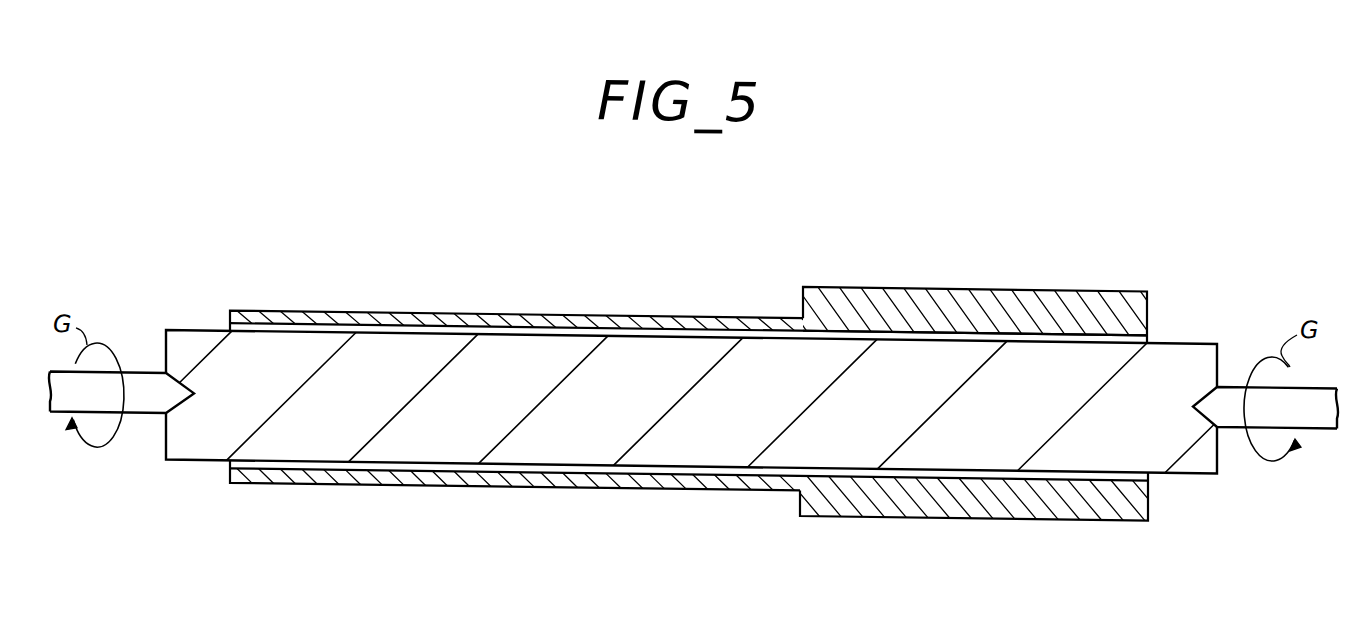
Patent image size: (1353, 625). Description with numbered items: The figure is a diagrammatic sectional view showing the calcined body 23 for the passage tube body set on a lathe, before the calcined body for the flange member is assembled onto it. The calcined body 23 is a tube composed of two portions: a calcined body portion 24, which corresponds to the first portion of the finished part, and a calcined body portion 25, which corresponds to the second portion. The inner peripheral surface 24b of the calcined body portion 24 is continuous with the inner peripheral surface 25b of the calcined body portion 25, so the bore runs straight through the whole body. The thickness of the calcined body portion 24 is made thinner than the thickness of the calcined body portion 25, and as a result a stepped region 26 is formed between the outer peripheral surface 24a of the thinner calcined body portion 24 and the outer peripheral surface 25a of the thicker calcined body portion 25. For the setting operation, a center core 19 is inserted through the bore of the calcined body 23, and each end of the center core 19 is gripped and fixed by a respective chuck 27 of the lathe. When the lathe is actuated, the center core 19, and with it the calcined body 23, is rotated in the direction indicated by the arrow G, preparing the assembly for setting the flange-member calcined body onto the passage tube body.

The center core 19 is at (462, 426).
The calcined body for the passage tube body 23 is at (691, 390).
The calcined body portion 24 is at (671, 365).
The outer peripheral surface 24a is at (523, 308).
The inner peripheral surface 24b is at (384, 316).
The calcined body portion 25 is at (973, 282).
The outer peripheral surface 25a is at (937, 278).
The inner peripheral surface 25b is at (841, 316).
The stepped region 26 is at (800, 487).
The chuck 27 is at (135, 385).